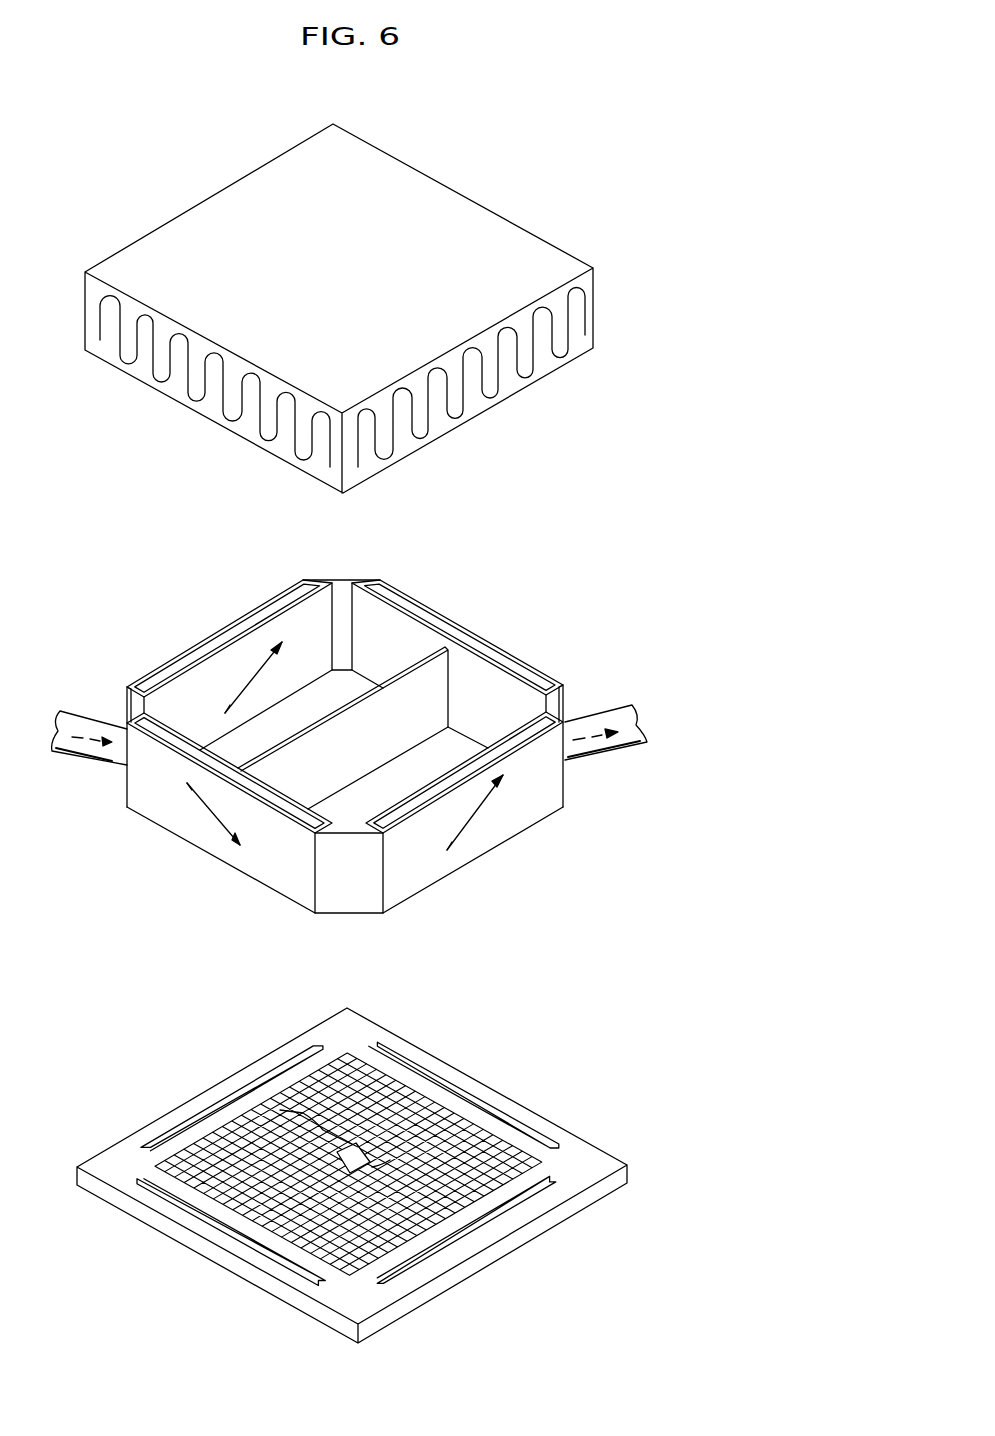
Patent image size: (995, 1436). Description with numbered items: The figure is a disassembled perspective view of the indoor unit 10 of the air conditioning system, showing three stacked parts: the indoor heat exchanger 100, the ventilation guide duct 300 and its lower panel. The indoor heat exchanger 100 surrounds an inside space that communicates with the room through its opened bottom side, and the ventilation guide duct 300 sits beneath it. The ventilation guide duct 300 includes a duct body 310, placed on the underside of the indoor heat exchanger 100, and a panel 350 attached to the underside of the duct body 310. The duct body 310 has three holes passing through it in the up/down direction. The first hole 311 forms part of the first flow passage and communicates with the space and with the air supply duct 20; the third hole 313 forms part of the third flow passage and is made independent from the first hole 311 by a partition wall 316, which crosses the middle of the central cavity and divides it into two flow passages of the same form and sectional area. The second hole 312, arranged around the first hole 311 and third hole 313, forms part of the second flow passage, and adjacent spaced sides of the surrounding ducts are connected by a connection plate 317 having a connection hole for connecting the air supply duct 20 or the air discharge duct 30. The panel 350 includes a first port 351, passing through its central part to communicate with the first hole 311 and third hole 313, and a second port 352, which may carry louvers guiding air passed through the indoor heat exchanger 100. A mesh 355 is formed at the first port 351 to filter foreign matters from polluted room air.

The indoor unit 10 is at (533, 144).
The indoor heat exchanger 100 is at (578, 317).
The air supply duct 20 is at (78, 753).
The air discharge duct 30 is at (622, 755).
The ventilation guide duct 300 is at (685, 917).
The duct body 310 is at (381, 747).
The first hole 311 is at (307, 707).
The second hole 312 is at (255, 625).
The third hole 313 is at (378, 782).
The partition wall 316 is at (435, 697).
The connection plate 317 is at (342, 592).
The panel 350 is at (375, 1160).
The first port 351 is at (283, 1108).
The second port 352 is at (165, 1142).
The mesh 355 is at (355, 1078).